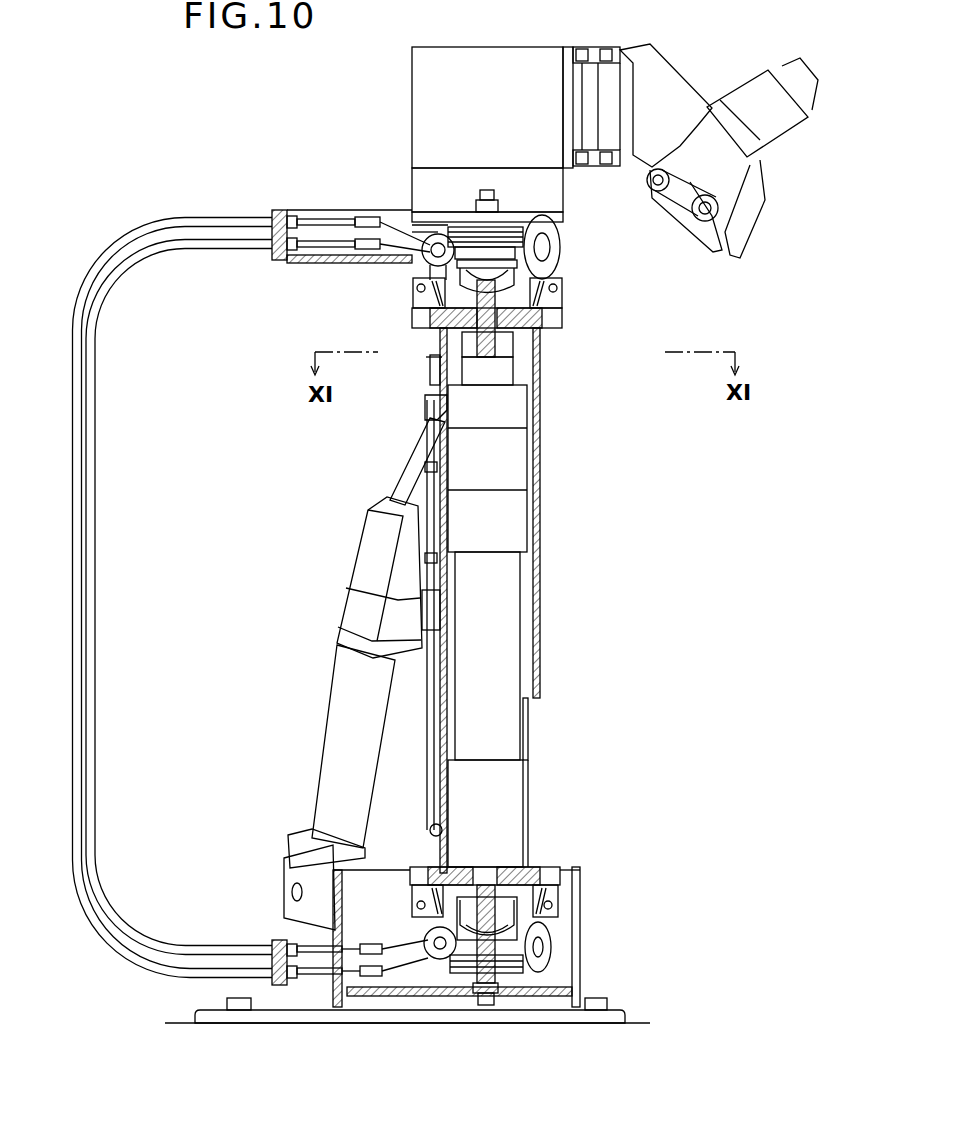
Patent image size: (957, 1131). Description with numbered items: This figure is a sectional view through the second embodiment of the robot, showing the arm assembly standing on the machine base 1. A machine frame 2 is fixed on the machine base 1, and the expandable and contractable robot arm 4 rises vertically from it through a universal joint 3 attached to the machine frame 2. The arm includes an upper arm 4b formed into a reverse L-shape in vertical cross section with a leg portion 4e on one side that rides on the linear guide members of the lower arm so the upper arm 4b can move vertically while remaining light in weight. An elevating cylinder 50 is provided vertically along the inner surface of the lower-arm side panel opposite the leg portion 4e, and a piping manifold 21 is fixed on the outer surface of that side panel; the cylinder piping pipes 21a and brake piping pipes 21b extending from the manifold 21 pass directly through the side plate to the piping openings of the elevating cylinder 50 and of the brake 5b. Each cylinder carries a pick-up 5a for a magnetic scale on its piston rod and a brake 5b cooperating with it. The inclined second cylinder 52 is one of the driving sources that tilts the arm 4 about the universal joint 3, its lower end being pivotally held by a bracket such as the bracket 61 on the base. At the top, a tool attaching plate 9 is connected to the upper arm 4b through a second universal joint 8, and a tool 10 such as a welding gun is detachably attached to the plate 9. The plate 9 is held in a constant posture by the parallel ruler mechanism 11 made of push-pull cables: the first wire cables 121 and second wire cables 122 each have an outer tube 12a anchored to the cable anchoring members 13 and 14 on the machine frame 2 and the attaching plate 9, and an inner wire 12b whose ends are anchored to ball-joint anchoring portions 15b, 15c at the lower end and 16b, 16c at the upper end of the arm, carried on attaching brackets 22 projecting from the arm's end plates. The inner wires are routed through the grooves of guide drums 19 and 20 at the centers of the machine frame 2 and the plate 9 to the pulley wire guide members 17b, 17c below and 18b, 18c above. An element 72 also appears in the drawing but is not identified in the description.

The machine base 1 is at (425, 1013).
The machine frame 2 is at (338, 1000).
The universal joint 3 is at (552, 930).
The robot arm 4 is at (547, 576).
The upper arm 4b is at (548, 477).
The leg portion 4e is at (542, 683).
The pick-up 5a is at (462, 404).
The brake 5b is at (462, 445).
The elevating cylinder 50 is at (508, 592).
The second cylinder 52 is at (348, 722).
The bracket 61 is at (287, 912).
The lever bracket 72 is at (430, 365).
The universal joint 8 is at (520, 272).
The tool attaching plate 9 is at (467, 228).
The tool 10 is at (775, 130).
The parallel ruler mechanism 11 is at (173, 592).
The outer tube 12a is at (215, 244).
The inner wire 12b is at (375, 230).
The first wire cable 121 is at (200, 217).
The second wire cable 122 is at (197, 249).
The cable anchoring member 13 is at (283, 985).
The cable anchoring member 14 is at (300, 264).
The wire anchoring portion 15b is at (555, 905).
The second wire anchoring portion 15c is at (420, 905).
The first wire anchoring portion 16b is at (552, 294).
The second wire anchoring portion 16c is at (418, 294).
The wire guide member 17b is at (550, 958).
The wire guide member 17c is at (425, 940).
The wire guide member 18b is at (538, 235).
The wire guide member 18c is at (440, 252).
The guide drum 19 is at (490, 985).
The guide drum 20 is at (497, 240).
The piping manifold 21 is at (448, 618).
The cylinder piping pipe 21a is at (432, 563).
The brake piping pipe 21b is at (433, 493).
The attaching bracket 22 is at (415, 320).